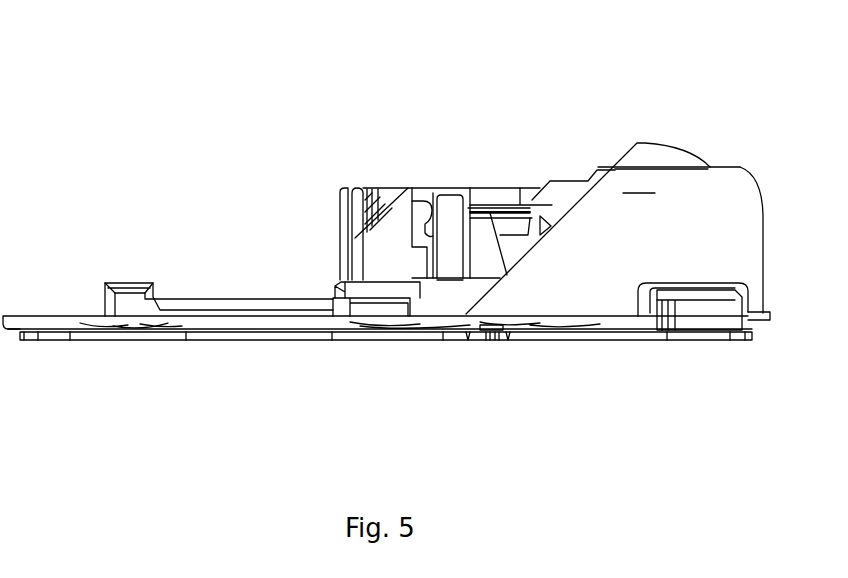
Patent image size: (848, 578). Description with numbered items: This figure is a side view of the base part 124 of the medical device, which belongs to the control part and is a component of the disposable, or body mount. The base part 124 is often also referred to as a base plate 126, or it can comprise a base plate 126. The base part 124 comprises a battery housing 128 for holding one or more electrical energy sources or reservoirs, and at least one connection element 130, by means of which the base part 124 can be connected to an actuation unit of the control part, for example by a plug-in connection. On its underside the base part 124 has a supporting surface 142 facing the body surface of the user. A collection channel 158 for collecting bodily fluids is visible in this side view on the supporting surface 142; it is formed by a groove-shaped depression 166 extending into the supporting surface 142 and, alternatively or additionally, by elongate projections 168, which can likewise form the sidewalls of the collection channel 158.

The base part 124 is at (216, 129).
The base plate 126 is at (61, 320).
The battery housing 128 is at (728, 193).
The connection element 130 is at (494, 193).
The supporting surface 142 is at (635, 340).
The collection channel 158 is at (488, 341).
The depression 166 is at (497, 341).
The elongate projections 168 is at (468, 341).